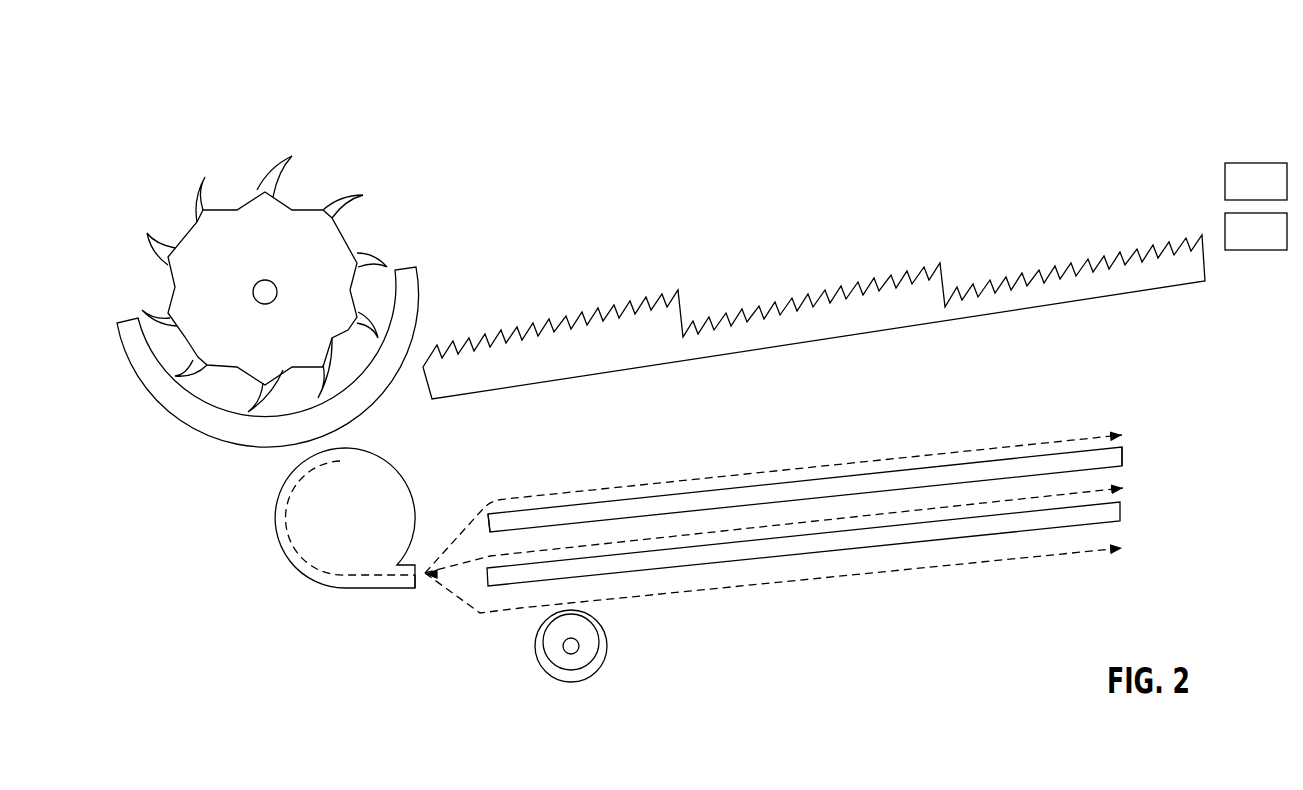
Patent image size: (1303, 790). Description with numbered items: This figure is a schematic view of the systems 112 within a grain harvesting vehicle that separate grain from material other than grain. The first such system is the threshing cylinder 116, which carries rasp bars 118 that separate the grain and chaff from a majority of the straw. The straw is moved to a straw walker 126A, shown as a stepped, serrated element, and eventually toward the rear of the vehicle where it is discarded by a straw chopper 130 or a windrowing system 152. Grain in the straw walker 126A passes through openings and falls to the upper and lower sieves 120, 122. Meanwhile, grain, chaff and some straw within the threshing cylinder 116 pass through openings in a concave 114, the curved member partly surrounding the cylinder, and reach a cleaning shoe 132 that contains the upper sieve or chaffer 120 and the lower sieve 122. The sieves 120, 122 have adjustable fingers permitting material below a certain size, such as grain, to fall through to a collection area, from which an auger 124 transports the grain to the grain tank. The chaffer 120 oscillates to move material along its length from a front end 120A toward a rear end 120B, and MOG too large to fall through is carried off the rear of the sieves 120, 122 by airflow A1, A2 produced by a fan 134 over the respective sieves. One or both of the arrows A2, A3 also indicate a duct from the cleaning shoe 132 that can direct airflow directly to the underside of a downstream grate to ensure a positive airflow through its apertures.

The grain and MOG separating systems 112 is at (387, 90).
The concave 114 is at (218, 425).
The threshing cylinder 116 is at (293, 208).
The rasp bars 118 is at (273, 167).
The upper sieve or chaffer 120 is at (717, 502).
The front end of chaffer 120A is at (467, 527).
The rear end of chaffer 120B is at (1123, 462).
The lower sieve 122 is at (1120, 517).
The auger 124 is at (605, 653).
The straw walker 126A is at (578, 292).
The straw chopper 130 is at (1187, 215).
The cleaning shoe 132 is at (407, 665).
The fan 134 is at (277, 538).
The windrowing system 152 is at (1185, 207).
The airflow over upper sieve A1 is at (972, 450).
The airflow over lower sieve A2 is at (1043, 497).
The duct airflow A3 is at (990, 560).